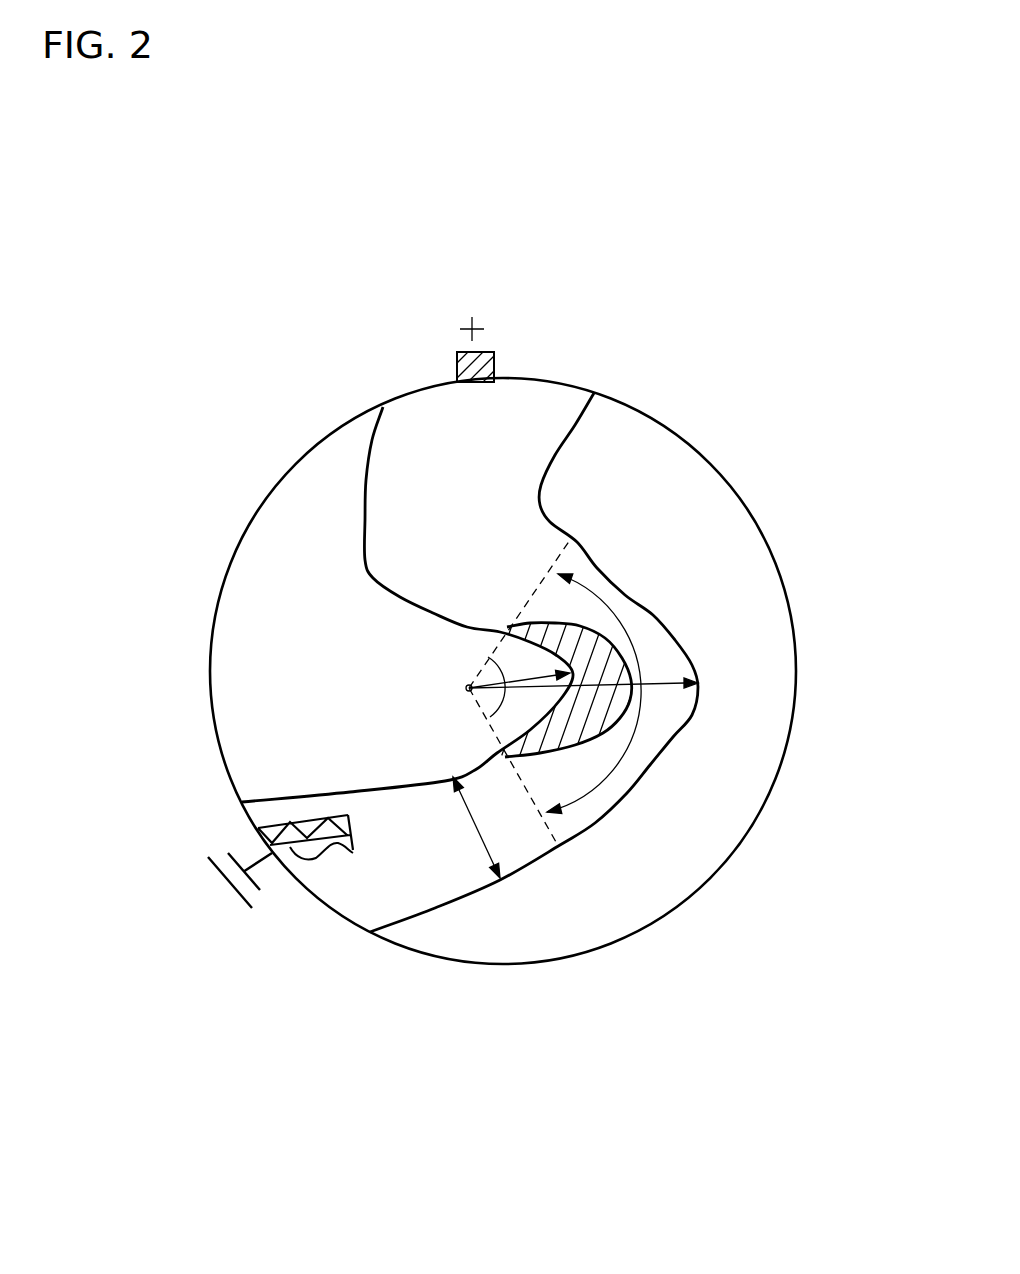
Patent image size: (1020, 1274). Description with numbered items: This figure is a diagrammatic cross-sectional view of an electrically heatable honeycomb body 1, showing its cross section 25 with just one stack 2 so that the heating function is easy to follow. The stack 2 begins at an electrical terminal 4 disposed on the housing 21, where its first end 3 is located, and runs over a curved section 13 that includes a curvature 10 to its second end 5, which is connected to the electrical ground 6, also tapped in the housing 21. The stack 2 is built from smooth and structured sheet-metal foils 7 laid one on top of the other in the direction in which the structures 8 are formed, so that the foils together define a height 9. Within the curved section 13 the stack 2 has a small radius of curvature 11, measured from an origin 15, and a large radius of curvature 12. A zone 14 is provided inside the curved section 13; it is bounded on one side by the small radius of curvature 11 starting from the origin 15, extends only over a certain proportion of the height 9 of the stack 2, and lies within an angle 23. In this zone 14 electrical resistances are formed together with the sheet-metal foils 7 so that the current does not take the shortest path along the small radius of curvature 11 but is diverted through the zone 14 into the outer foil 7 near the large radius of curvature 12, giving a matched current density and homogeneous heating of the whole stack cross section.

The honeycomb body 1 is at (545, 1036).
The stack 2 is at (545, 423).
The first end 3 is at (408, 437).
The electrical terminal 4 is at (485, 363).
The second end 5 is at (360, 902).
The electrical ground 6 is at (220, 871).
The sheet-metal foils 7 is at (258, 828).
The structures 8 is at (280, 848).
The height 9 is at (479, 832).
The curvature 10 is at (748, 620).
The small radius of curvature 11 is at (488, 657).
The large radius of curvature 12 is at (660, 687).
The curved section 13 is at (573, 800).
The zone 14 is at (520, 640).
The origin 15 is at (466, 688).
The housing 21 is at (760, 527).
The angle 23 is at (474, 703).
The cross section 25 is at (230, 652).